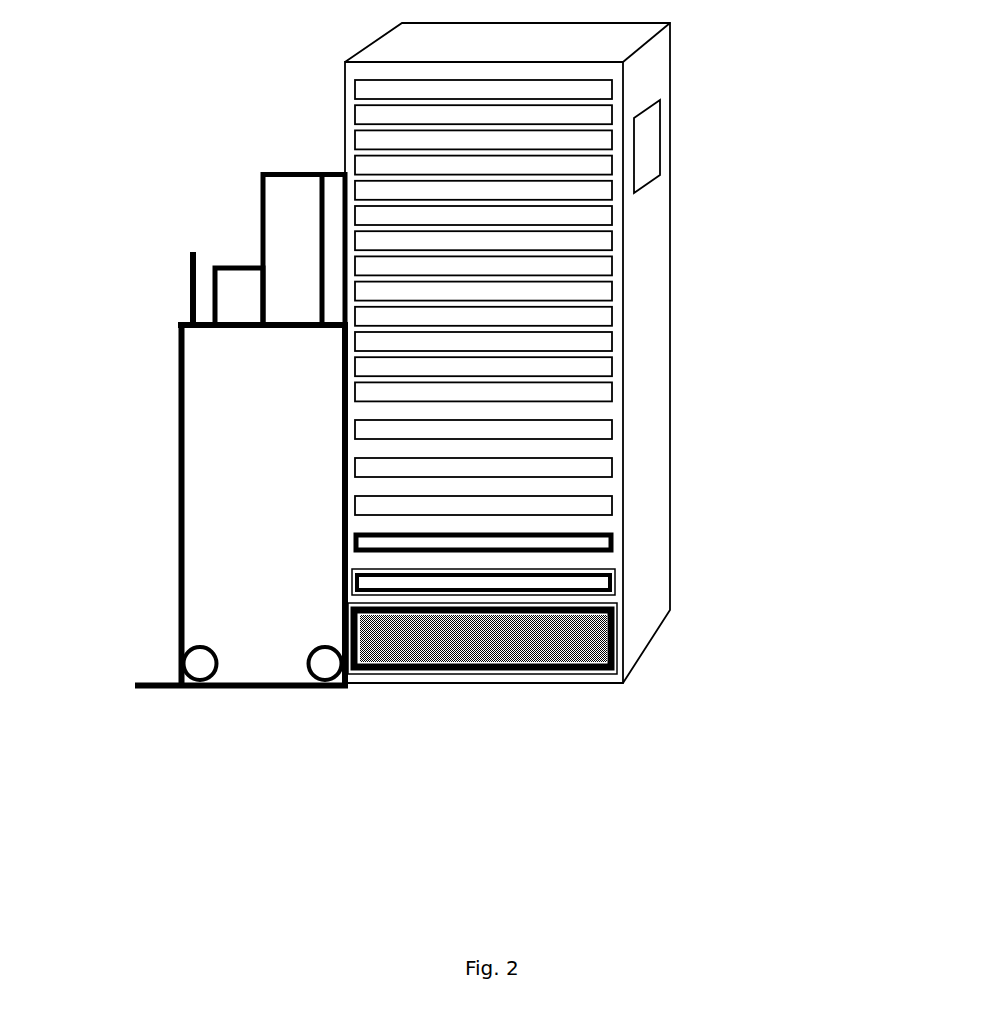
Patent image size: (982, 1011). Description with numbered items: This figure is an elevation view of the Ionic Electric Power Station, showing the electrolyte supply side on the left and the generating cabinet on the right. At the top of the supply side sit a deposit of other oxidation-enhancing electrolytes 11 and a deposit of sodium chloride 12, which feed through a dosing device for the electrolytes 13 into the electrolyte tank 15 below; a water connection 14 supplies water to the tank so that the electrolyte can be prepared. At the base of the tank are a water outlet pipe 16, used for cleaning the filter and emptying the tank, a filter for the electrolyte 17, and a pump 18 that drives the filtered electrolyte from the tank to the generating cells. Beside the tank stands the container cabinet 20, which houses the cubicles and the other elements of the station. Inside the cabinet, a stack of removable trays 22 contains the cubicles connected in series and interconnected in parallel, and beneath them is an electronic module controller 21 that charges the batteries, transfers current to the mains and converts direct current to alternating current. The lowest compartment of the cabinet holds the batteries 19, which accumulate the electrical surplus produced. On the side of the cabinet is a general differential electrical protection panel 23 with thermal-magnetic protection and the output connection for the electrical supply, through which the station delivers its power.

The deposit of other oxidation-enhancing electrolytes 11 is at (331, 193).
The deposit of sodium chloride 12 is at (286, 193).
The dosing device for the electrolytes 13 is at (228, 285).
The water connection 14 is at (190, 268).
The electrolyte tank 15 is at (217, 402).
The water outlet pipe 16 is at (147, 688).
The filter for the electrolyte 17 is at (193, 665).
The pump 18 is at (327, 688).
The batteries 19 is at (600, 665).
The container cabinet 20 is at (645, 610).
The electronic module controller 21 is at (612, 570).
The removable trays 22 is at (598, 364).
The general differential electrical protection panel 23 is at (645, 155).